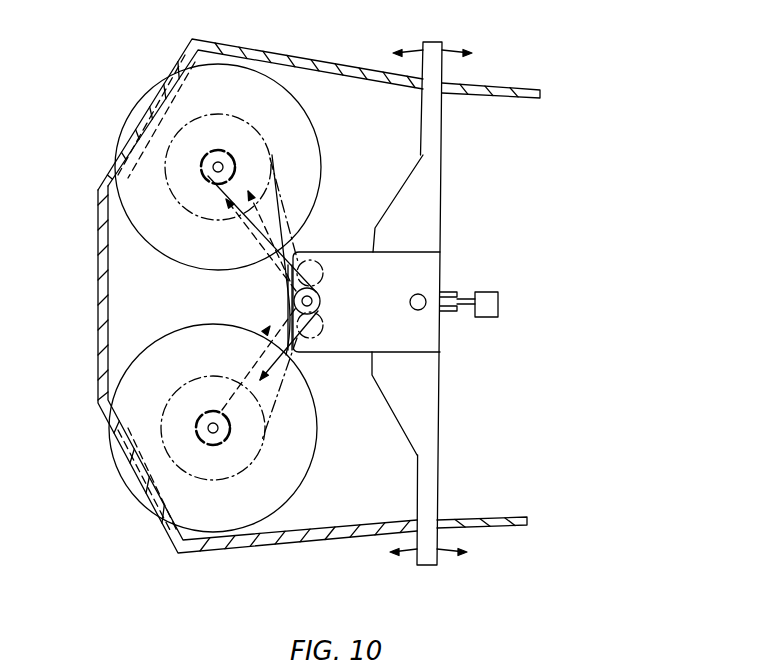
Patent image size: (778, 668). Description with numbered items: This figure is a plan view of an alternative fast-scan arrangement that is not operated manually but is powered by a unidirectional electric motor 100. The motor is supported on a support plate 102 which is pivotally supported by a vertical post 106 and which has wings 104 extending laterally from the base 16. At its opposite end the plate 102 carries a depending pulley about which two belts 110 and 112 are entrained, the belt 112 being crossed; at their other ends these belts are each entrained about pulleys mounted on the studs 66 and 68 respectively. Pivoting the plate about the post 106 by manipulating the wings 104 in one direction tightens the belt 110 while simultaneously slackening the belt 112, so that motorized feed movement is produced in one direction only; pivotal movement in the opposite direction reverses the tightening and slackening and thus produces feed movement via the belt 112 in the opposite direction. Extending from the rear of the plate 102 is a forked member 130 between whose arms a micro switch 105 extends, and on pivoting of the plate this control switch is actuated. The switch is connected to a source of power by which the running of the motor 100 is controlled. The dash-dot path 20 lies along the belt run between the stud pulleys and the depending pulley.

The base 16 is at (115, 330).
The tape 20 is at (285, 221).
The stud 66 is at (217, 158).
The stud 68 is at (200, 432).
The unidirectional electric motor 100 is at (345, 258).
The support plate 102 is at (397, 403).
The wings 104 is at (437, 44).
The micro switch 105 is at (490, 296).
The vertical post 106 is at (422, 297).
The belt 110 is at (278, 324).
The belt 112 is at (279, 275).
The forked member 130 is at (456, 293).